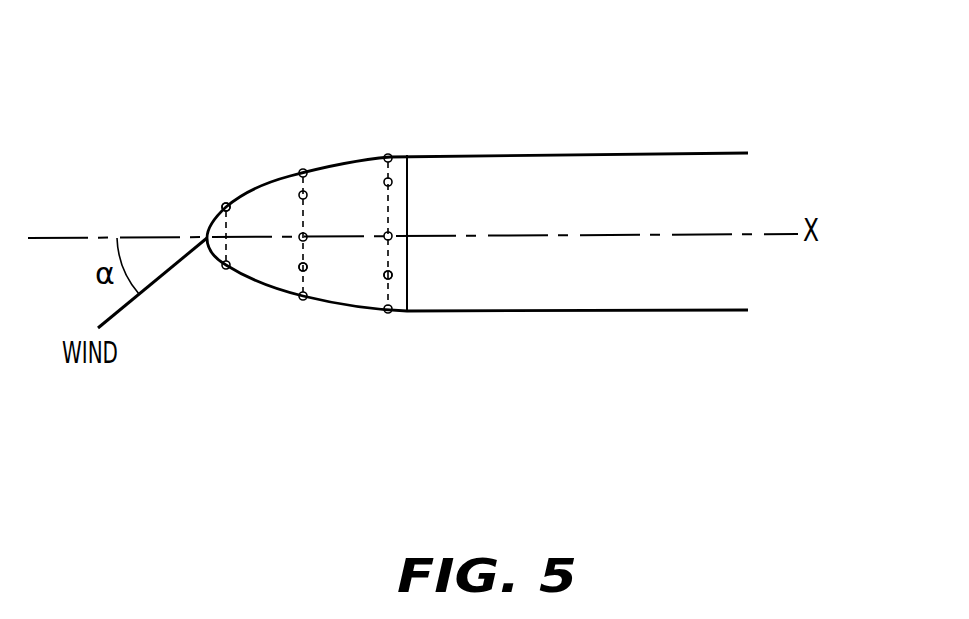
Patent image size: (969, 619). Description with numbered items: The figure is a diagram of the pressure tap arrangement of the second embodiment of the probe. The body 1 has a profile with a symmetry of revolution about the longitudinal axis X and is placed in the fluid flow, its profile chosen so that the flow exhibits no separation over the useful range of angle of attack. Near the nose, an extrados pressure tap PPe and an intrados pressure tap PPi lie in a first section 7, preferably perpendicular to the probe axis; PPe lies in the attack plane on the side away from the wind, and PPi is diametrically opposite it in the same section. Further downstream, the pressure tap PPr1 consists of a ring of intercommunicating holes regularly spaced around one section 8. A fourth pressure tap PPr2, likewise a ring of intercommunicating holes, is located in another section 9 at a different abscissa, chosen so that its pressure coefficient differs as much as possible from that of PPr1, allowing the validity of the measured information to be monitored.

The body 1 is at (662, 153).
The first section 7 is at (228, 226).
The section 8 is at (300, 274).
The section 9 is at (384, 262).
The extrados pressure tap PPe is at (223, 204).
The intrados pressure tap PPi is at (222, 272).
The pressure tap PPr1 is at (305, 292).
The fourth pressure tap PPr2 is at (392, 310).